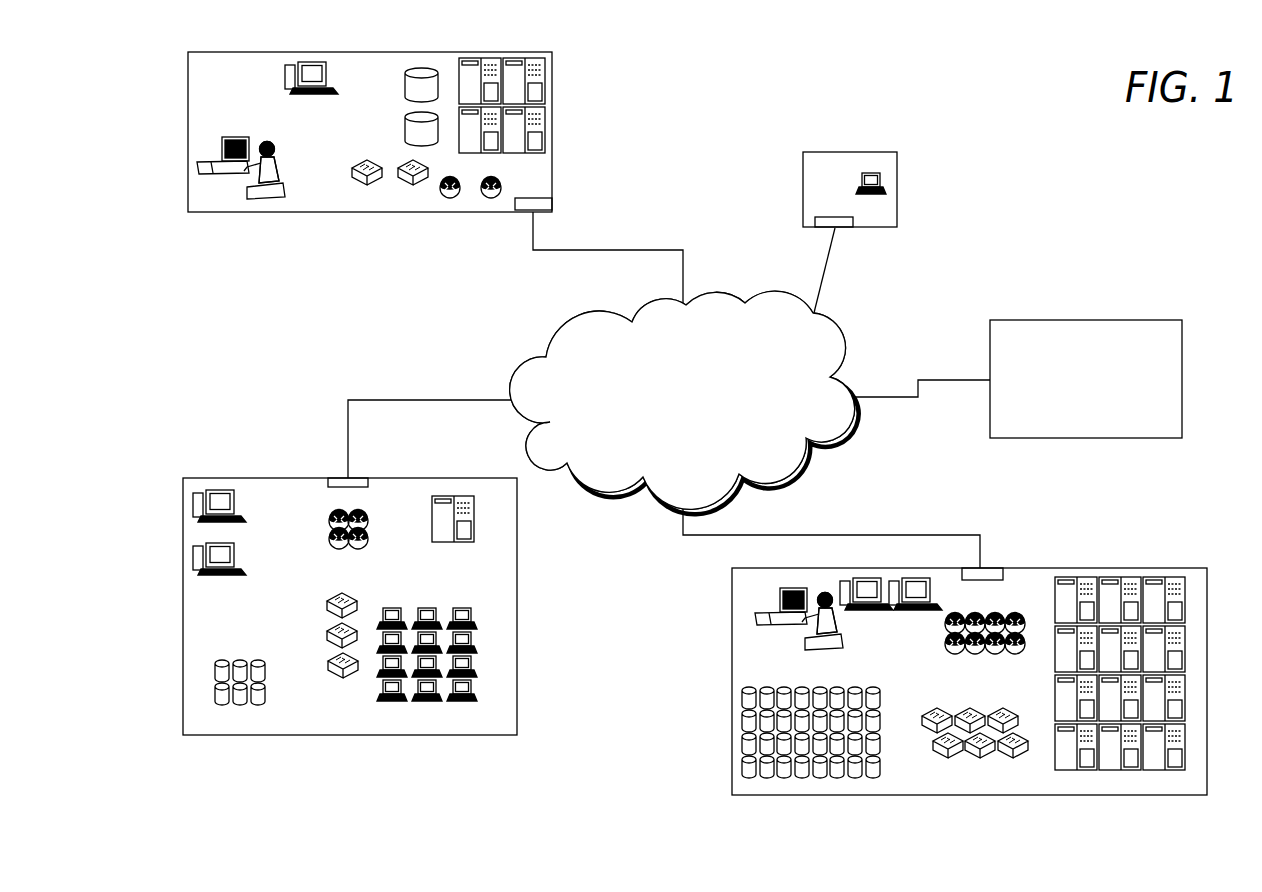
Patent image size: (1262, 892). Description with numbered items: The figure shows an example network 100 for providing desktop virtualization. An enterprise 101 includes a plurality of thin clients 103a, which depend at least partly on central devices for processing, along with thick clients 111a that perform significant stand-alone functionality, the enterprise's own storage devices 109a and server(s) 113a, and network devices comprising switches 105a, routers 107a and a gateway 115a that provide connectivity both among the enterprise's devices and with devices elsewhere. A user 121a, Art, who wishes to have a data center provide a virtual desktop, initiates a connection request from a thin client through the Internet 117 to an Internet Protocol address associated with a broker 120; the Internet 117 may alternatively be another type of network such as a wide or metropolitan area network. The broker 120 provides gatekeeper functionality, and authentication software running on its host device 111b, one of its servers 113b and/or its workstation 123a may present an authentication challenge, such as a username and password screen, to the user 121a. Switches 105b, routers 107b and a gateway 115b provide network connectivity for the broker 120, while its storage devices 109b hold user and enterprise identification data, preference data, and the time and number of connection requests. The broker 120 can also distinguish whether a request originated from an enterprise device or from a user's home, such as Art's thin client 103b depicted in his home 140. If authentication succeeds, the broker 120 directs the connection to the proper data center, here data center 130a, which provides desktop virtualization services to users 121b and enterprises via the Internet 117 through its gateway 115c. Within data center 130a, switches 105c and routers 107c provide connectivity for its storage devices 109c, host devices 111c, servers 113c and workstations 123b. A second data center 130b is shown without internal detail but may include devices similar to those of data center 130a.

The network 100 is at (1022, 232).
The enterprise 101 is at (313, 742).
The thin clients 103a is at (465, 614).
The thin client 103b is at (877, 172).
The switches 105a is at (325, 634).
The switches 105b is at (403, 185).
The switches 105c is at (985, 758).
The routers 107a is at (330, 517).
The routers 107b is at (492, 197).
The routers 107c is at (998, 652).
The storage devices 109a is at (248, 668).
The storage devices 109b is at (430, 68).
The storage devices 109c is at (735, 732).
The thick clients 111a is at (225, 500).
The host device 111b is at (330, 93).
The host devices 111c is at (870, 592).
The server(s) 113a is at (452, 500).
The servers 113b is at (528, 60).
The servers 113c is at (1173, 582).
The gateway 115a is at (360, 483).
The gateway 115b is at (545, 204).
The gateway 115c is at (990, 575).
The Internet 117 is at (537, 397).
The broker 120 is at (297, 230).
The user 121a is at (280, 172).
The users 121b is at (838, 635).
The workstation 123a is at (227, 142).
The workstations 123b is at (783, 590).
The data center 130a is at (727, 644).
The data center 130b is at (1045, 445).
The home 140 is at (800, 233).